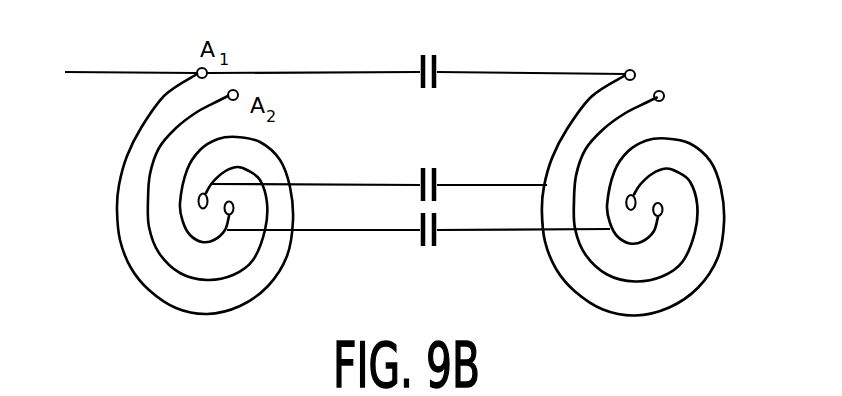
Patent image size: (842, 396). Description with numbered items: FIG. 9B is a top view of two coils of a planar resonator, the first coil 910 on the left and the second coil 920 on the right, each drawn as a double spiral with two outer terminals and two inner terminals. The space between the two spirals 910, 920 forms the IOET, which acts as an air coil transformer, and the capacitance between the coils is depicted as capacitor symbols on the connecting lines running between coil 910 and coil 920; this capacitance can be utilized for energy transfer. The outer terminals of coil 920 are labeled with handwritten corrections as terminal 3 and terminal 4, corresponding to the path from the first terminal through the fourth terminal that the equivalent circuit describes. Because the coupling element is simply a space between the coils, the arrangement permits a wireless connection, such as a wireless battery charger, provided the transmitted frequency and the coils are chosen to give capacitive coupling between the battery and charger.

The first double-spiral coil 910 is at (143, 287).
The second double-spiral coil 920 is at (695, 293).
The terminal A3 of second coil 3 is at (664, 50).
The terminal A4 of second coil 4 is at (706, 102).